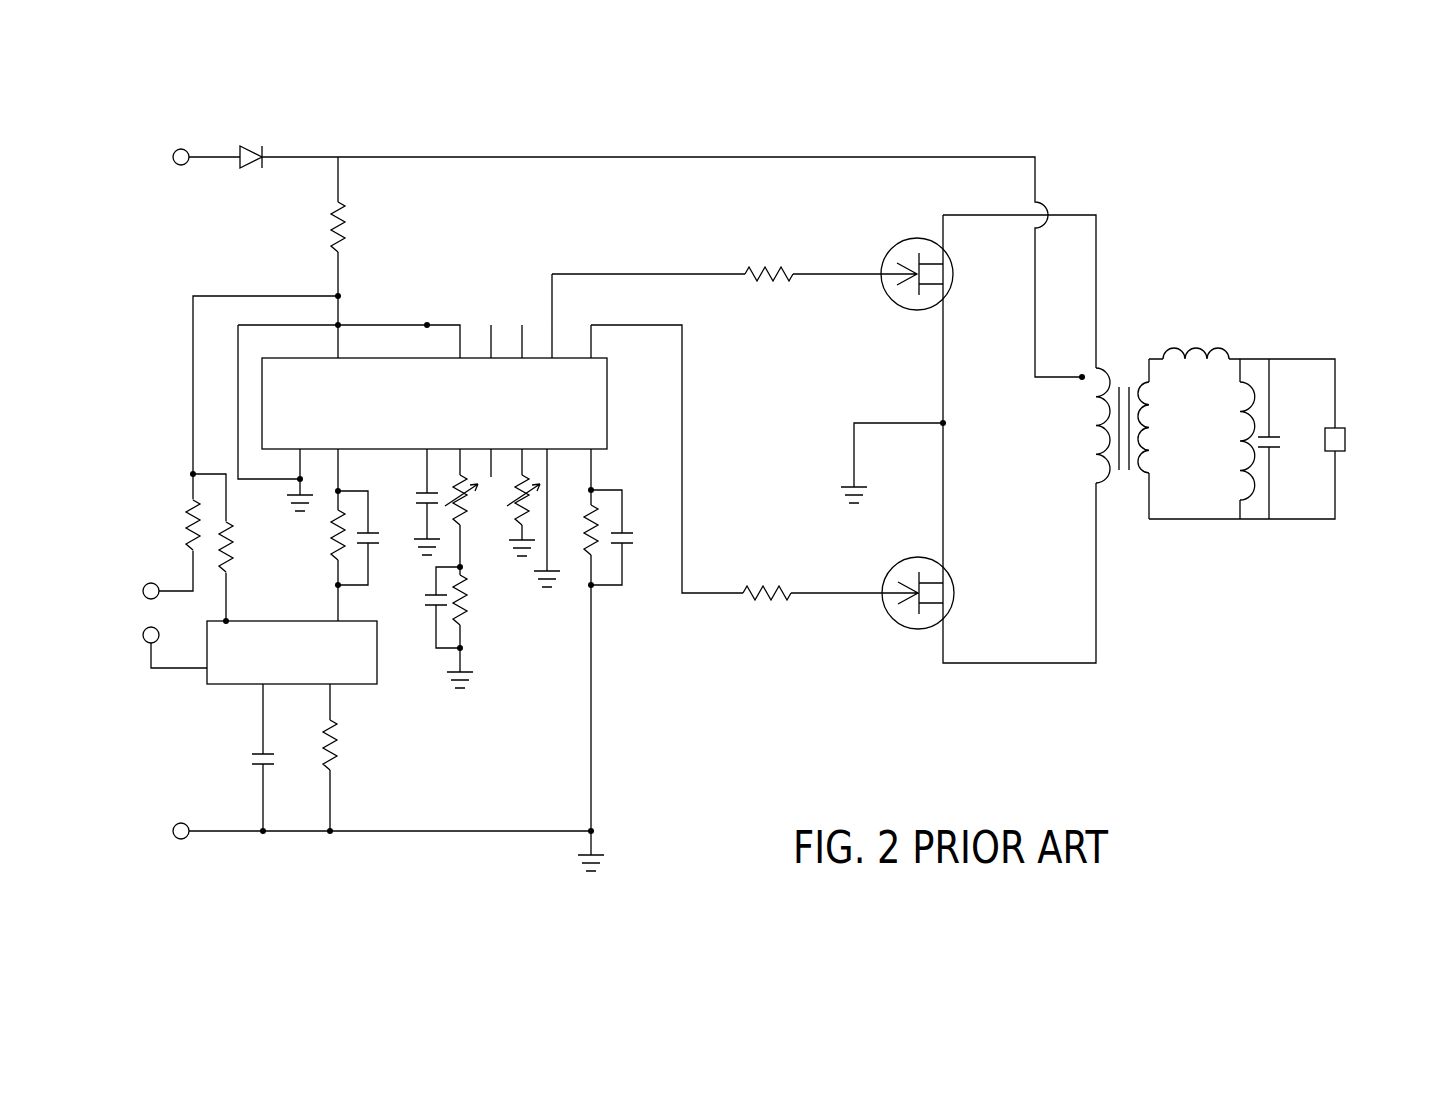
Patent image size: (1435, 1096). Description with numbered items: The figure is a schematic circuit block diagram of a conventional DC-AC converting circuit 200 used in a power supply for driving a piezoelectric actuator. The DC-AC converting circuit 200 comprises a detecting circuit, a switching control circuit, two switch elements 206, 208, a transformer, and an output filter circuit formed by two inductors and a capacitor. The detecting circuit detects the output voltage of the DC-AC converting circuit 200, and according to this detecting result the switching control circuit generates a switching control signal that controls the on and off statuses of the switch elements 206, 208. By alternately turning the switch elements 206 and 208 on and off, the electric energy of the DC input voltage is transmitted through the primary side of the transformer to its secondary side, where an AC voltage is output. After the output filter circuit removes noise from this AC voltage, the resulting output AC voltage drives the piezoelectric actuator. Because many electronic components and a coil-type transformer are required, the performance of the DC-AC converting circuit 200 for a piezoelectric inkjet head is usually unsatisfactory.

The DC-AC converting circuit 200 is at (1210, 244).
The switch element 206 is at (913, 293).
The switch element 208 is at (913, 612).